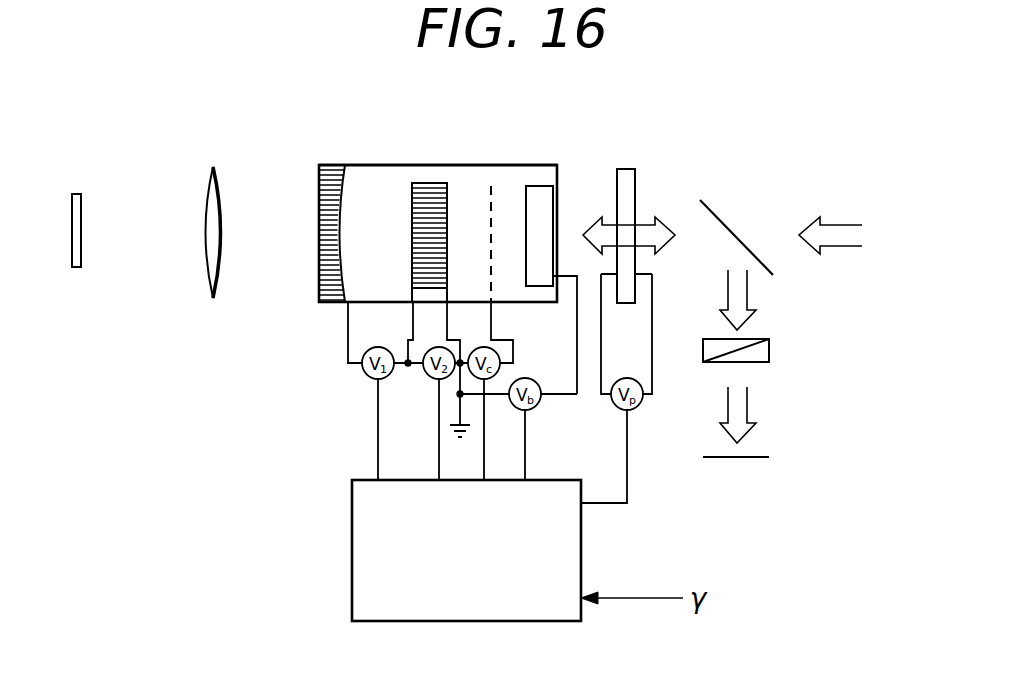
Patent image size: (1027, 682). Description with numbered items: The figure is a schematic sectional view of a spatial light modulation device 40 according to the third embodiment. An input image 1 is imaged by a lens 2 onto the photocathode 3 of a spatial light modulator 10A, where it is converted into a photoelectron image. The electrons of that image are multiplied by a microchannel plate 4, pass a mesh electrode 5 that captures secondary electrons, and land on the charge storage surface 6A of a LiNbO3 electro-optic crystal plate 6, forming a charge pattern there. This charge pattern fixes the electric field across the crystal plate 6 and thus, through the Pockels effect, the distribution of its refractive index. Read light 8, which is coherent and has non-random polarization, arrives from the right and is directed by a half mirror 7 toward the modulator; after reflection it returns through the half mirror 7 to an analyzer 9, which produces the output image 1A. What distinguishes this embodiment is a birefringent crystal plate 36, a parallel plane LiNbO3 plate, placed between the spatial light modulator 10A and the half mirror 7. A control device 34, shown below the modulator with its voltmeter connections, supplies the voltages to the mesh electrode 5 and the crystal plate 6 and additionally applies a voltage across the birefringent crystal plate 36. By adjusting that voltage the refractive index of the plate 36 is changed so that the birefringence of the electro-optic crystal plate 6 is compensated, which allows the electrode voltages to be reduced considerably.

The input image 1 is at (76, 192).
The lens 2 is at (211, 178).
The photocathode 3 is at (330, 165).
The microchannel plate 4 is at (420, 183).
The mesh electrode 5 is at (492, 188).
The electro-optic crystal plate 6 is at (537, 202).
The charge storage surface 6A is at (525, 255).
The half mirror 7 is at (720, 218).
The read light 8 is at (843, 225).
The analyzer 9 is at (769, 350).
The spatial light modulator 10A is at (458, 165).
The output image 1A is at (758, 457).
The control device 34 is at (352, 598).
The birefringent crystal plate 36 is at (628, 180).
The spatial light modulation device 40 is at (507, 138).